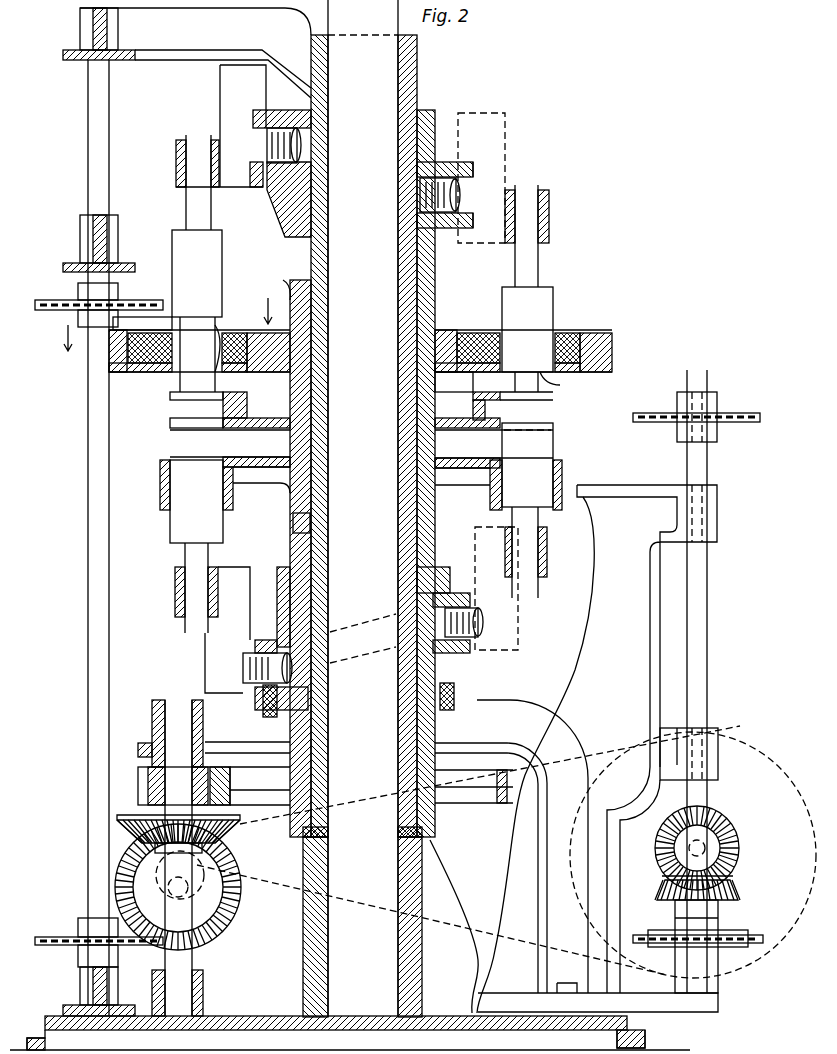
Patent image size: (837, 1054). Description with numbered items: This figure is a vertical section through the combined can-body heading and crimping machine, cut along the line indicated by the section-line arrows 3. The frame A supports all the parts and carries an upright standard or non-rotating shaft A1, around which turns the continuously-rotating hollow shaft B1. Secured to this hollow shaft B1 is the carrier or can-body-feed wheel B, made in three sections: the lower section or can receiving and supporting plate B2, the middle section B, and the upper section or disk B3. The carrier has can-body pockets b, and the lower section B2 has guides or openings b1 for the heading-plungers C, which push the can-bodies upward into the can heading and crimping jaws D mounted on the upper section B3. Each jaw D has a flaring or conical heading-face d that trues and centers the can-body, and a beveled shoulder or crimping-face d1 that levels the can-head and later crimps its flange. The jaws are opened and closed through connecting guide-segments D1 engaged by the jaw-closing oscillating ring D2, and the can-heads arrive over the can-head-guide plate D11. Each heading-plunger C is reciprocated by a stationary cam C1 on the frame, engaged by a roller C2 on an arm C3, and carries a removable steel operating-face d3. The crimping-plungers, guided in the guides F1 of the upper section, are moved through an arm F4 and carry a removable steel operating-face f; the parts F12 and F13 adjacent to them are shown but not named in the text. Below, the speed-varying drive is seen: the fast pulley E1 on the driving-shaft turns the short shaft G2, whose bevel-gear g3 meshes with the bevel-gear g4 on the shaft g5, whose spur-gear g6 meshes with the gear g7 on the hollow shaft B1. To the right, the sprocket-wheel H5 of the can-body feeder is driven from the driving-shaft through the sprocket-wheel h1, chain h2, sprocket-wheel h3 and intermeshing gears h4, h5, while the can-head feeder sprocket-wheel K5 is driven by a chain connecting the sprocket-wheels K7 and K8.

The frame A is at (730, 992).
The upright standard or non-rotating shaft A1 is at (362, 508).
The continuously-rotating hollow shaft B1 is at (417, 322).
The carrier or can-body-feed wheel B is at (172, 396).
The lower section or can receiving and supporting plate B2 is at (160, 470).
The upper section or disk of the carrier B3 is at (644, 340).
The can-body pocket b is at (574, 394).
The guide or opening b1 is at (162, 490).
The heading-plunger C is at (270, 205).
The stationary cam C1 is at (468, 653).
The roller C2 is at (265, 685).
The arm C3 is at (240, 660).
The can heading and crimping jaws D is at (575, 308).
The connecting guide-segment D1 is at (128, 372).
The jaw-closing oscillating ring D2 is at (128, 345).
The can-head-guide plate D11 is at (620, 325).
The flaring or conical heading-face d is at (604, 384).
The beveled shoulder or crimping-face d1 is at (210, 345).
The removable steel operating-face d3 is at (172, 457).
The fast pulley E1 is at (115, 847).
The guide for crimping-plunger F1 is at (362, 263).
The arm F4 is at (262, 150).
The roller bracket F12 is at (478, 164).
The roller F13 is at (462, 192).
The removable steel operating-face f is at (215, 325).
The shaft G2 is at (173, 880).
The bevel-gear g3 is at (112, 879).
The bevel-gear g4 is at (232, 826).
The shaft g5 is at (175, 718).
The spur-gear g6 is at (140, 786).
The gear g7 is at (500, 805).
The sprocket-wheel H5 is at (740, 415).
The sprocket-wheel h1 is at (215, 867).
The chain h2 is at (623, 745).
The sprocket-wheel h3 is at (745, 730).
The gear h4 is at (740, 838).
The gear h5 is at (742, 886).
The sprocket-wheel K5 is at (50, 282).
The sprocket-wheel K7 is at (748, 935).
The sprocket-wheel K8 is at (50, 948).
The section line 3 is at (166, 315).